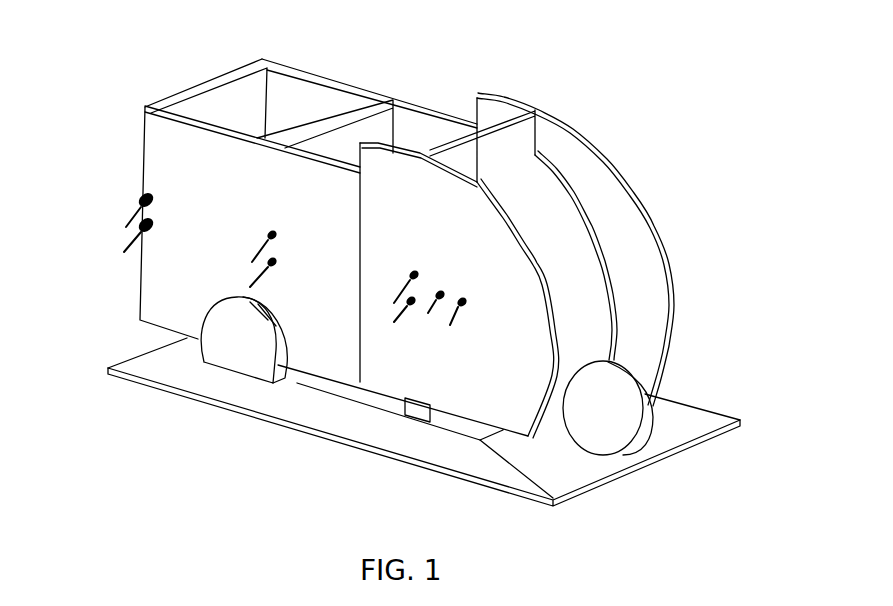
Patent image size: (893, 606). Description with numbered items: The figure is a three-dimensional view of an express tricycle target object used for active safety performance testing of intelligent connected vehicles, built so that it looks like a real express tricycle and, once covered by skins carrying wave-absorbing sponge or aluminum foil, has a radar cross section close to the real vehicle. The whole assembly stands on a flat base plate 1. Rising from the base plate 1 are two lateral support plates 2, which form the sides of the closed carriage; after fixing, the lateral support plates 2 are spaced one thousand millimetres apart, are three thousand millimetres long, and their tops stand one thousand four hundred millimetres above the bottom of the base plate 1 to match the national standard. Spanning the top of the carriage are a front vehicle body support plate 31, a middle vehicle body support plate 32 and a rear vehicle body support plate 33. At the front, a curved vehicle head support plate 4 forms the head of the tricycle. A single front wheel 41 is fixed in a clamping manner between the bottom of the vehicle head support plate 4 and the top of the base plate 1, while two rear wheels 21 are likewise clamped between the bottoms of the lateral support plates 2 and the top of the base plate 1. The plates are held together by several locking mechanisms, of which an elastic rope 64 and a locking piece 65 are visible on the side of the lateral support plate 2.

The base plate 1 is at (317, 435).
The lateral support plate 2 is at (135, 282).
The rear wheel 21 is at (237, 372).
The front vehicle body support plate 31 is at (460, 127).
The middle vehicle body support plate 32 is at (347, 117).
The rear vehicle body support plate 33 is at (230, 83).
The vehicle head support plate 4 is at (592, 233).
The front wheel 41 is at (647, 390).
The elastic rope 64 is at (139, 215).
The locking piece 65 is at (138, 190).